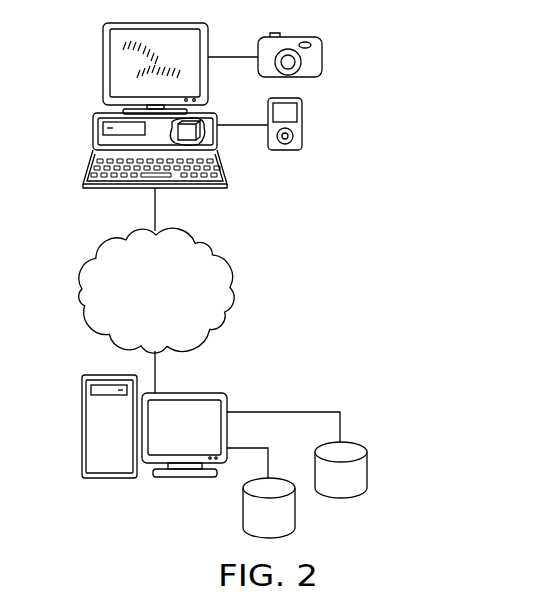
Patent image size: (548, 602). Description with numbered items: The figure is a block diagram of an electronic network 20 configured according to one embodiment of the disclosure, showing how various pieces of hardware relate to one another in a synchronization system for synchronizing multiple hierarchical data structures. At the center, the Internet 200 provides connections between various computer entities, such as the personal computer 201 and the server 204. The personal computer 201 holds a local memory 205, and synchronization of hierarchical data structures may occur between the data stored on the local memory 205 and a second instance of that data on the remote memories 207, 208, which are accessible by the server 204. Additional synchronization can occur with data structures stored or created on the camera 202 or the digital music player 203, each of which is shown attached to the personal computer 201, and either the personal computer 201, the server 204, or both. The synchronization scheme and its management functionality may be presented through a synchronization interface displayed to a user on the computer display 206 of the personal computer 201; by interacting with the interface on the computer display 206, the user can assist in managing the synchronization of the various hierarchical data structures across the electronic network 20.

The electronic network 20 is at (406, 174).
The Internet 200 is at (75, 291).
The personal computer 201 is at (93, 130).
The camera 202 is at (322, 55).
The digital music player 203 is at (302, 118).
The server 204 is at (82, 426).
The local memory 205 is at (190, 135).
The computer display 206 is at (103, 63).
The remote memory 207 is at (367, 477).
The remote memory 208 is at (295, 513).